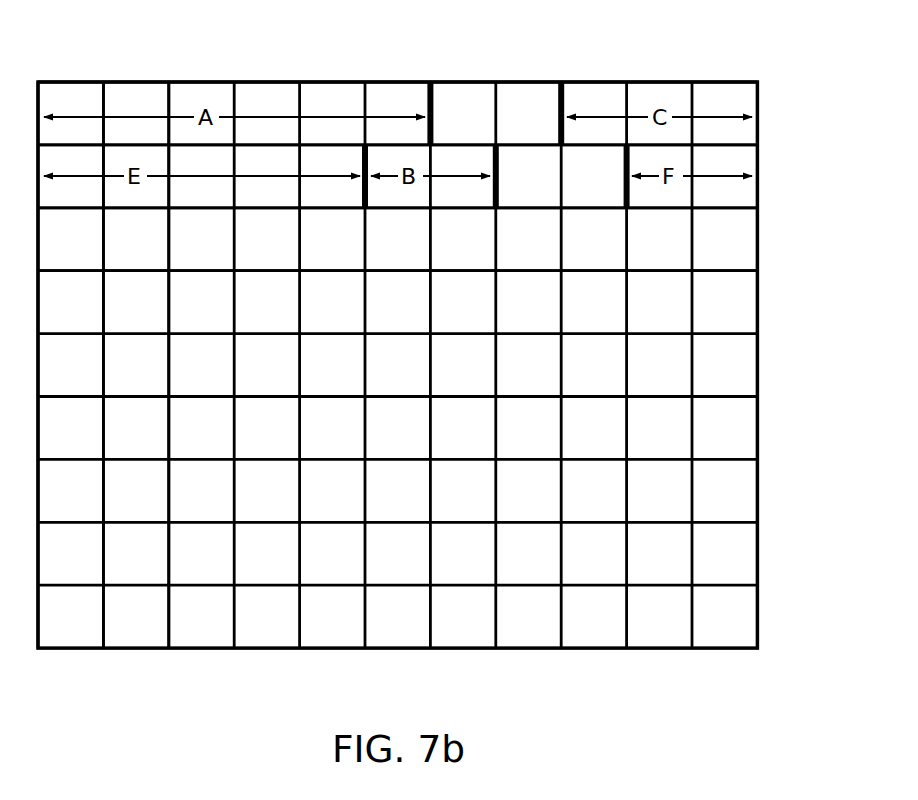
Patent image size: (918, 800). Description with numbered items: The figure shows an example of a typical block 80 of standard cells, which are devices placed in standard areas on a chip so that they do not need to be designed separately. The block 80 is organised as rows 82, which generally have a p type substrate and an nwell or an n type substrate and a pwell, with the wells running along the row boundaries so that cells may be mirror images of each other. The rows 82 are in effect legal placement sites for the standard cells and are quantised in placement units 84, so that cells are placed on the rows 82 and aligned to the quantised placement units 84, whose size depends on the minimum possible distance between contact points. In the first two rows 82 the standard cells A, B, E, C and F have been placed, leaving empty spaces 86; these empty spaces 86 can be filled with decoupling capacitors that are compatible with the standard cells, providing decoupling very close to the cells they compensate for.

The block of standard cells 80 is at (776, 64).
The rows 82 is at (757, 240).
The quantised placement units 84 is at (203, 80).
The empty spaces 86 is at (546, 170).